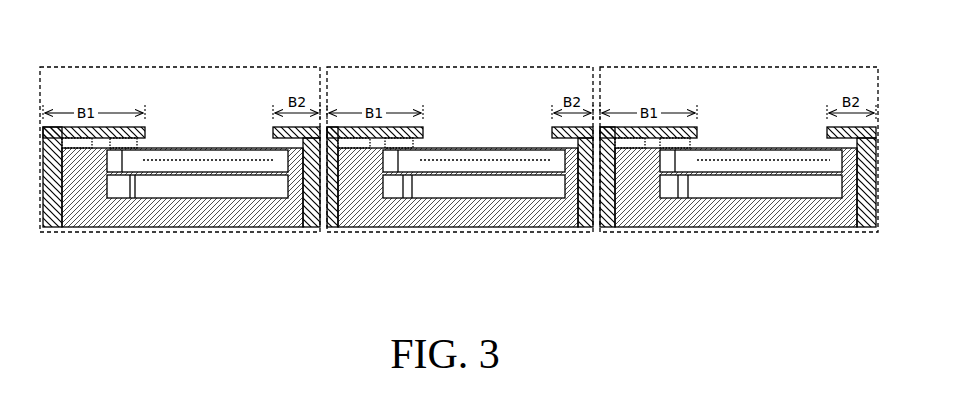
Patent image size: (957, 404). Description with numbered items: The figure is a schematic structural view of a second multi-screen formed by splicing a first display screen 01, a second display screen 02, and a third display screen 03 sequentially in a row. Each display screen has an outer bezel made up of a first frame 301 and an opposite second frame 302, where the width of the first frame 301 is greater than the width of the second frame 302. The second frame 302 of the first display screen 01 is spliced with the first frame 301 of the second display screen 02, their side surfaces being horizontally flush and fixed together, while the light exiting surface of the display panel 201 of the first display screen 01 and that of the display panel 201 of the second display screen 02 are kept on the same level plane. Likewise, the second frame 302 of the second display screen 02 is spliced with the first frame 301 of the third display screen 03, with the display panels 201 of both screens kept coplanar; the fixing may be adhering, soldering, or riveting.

The first display screen 01 is at (173, 64).
The second display screen 02 is at (453, 64).
The third display screen 03 is at (725, 64).
The display panel 201 is at (161, 147).
The first frame 301 is at (47, 214).
The second frame 302 is at (313, 214).